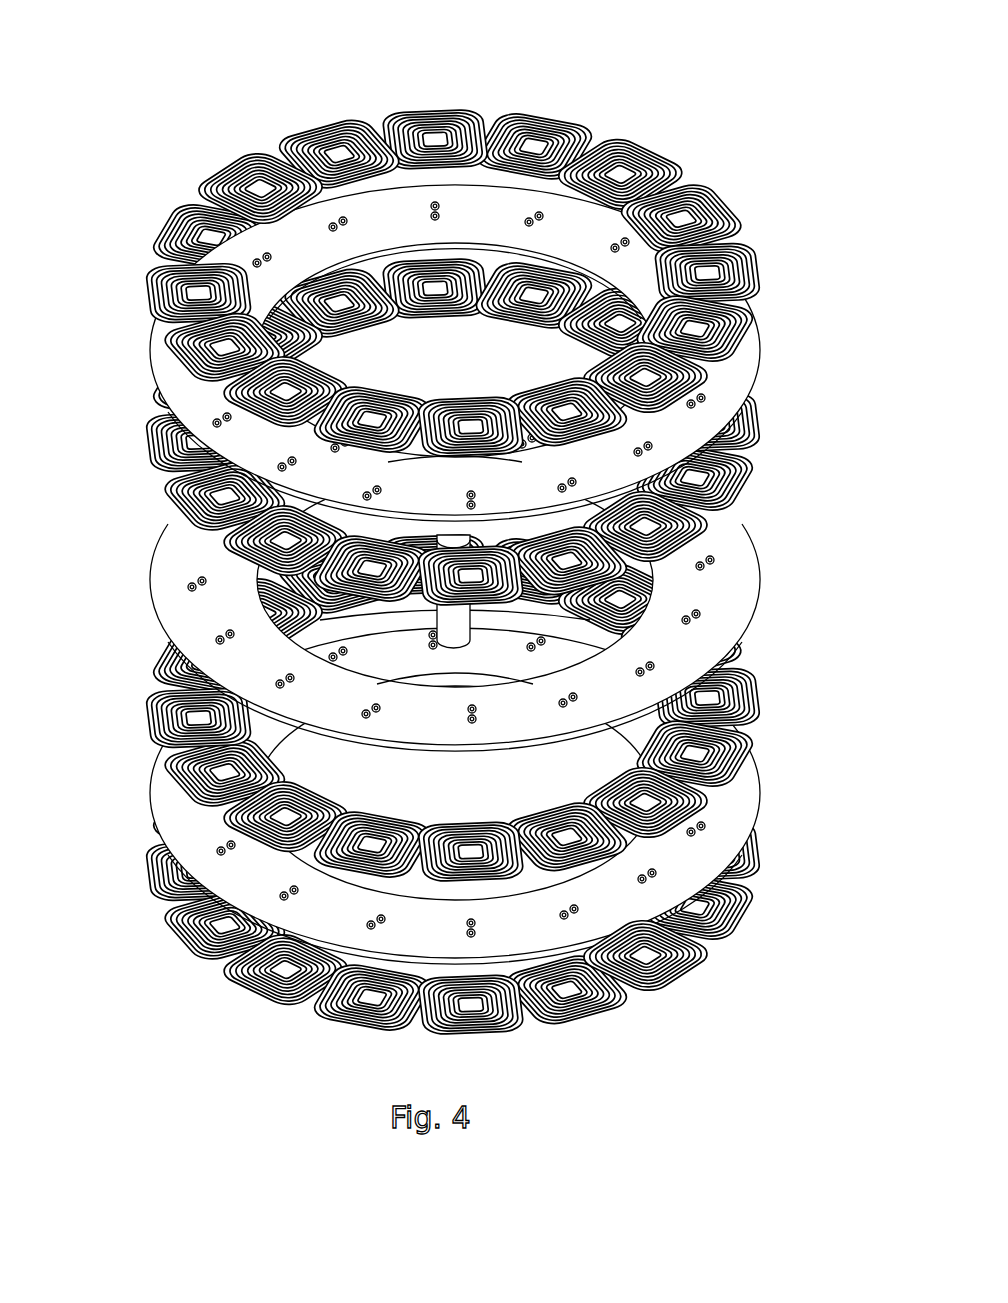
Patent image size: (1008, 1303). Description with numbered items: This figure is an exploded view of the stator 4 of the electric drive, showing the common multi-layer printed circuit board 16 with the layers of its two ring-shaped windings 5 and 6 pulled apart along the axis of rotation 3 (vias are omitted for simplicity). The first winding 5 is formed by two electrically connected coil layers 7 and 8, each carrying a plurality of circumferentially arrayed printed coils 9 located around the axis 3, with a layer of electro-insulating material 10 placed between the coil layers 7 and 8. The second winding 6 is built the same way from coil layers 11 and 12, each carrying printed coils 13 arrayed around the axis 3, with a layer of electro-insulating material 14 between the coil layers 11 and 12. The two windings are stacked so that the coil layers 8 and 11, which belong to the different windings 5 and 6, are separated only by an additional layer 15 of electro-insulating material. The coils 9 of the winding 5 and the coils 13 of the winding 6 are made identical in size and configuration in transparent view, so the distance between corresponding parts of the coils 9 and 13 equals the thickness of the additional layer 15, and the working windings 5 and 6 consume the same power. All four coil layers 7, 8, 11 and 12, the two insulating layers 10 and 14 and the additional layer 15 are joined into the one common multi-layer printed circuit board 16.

The axis of rotation 3 is at (255, 612).
The stator 4 is at (121, 87).
The common multi-layer printed circuit board 16 is at (441, 568).
The ring-shaped winding 5 is at (463, 245).
The ring-shaped winding 6 is at (427, 906).
The coil layer 7 is at (655, 153).
The coil layer 8 is at (158, 452).
The printed coils 9 is at (548, 122).
The layer of electro-insulating material 10 is at (742, 368).
The coil layer 11 is at (728, 700).
The coil layer 12 is at (262, 978).
The printed coils 13 is at (172, 700).
The layer of electro-insulating material 14 is at (742, 800).
The additional layer of electro-insulating material 15 is at (738, 586).